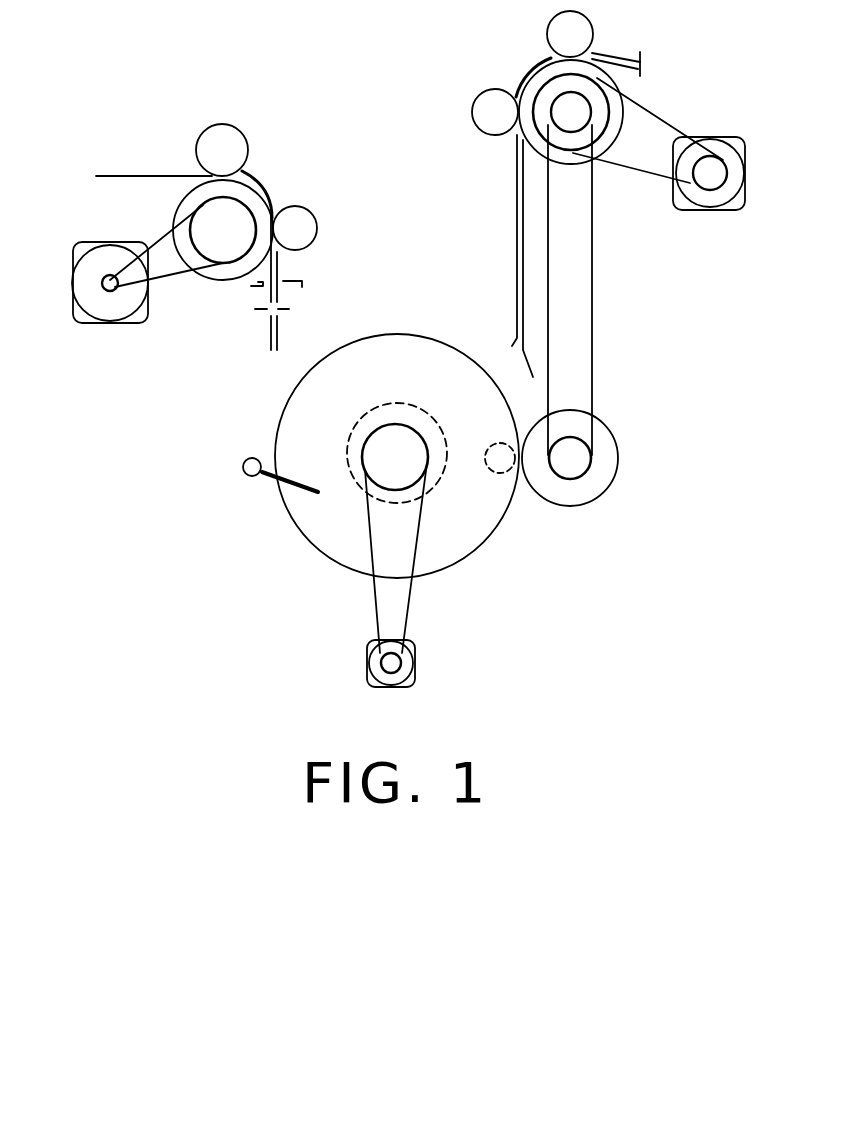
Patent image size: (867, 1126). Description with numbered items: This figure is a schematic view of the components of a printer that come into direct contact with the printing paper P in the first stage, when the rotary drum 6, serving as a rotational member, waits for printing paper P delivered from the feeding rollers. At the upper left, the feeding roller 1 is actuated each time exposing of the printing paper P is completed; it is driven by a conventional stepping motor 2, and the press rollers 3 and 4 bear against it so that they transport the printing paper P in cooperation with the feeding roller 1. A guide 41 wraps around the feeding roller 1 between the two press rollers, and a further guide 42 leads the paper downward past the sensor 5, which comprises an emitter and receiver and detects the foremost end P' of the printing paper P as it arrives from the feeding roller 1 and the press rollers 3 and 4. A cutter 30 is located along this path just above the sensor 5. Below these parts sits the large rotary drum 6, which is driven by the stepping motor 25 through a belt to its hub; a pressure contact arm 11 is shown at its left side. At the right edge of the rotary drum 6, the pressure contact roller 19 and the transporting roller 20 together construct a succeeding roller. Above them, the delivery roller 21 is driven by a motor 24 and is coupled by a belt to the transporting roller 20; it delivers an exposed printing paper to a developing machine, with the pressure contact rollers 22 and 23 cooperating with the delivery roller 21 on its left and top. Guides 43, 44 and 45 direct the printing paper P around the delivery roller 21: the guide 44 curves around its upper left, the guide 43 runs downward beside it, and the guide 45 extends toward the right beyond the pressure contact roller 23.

The printing paper P is at (154, 148).
The foremost end of the printing paper P' is at (249, 336).
The feeding roller 1 is at (215, 280).
The stepping motor 2 is at (135, 323).
The press roller 3 is at (245, 136).
The press roller 4 is at (312, 212).
The sensor 5 is at (288, 305).
The rotary drum 6 is at (458, 538).
The pressure contact arm 11 is at (253, 478).
The pressure contact roller 19 is at (502, 477).
The transporting roller 20 is at (588, 498).
The delivery roller 21 is at (533, 150).
The pressure contact roller 22 is at (482, 133).
The pressure contact roller 23 is at (590, 32).
The motor 24 is at (736, 212).
The stepping motor 25 is at (410, 682).
The cutter 30 is at (297, 272).
The guide 41 is at (267, 184).
The guide 42 is at (278, 332).
The guide 43 is at (515, 227).
The guide 44 is at (535, 64).
The guide 45 is at (622, 57).